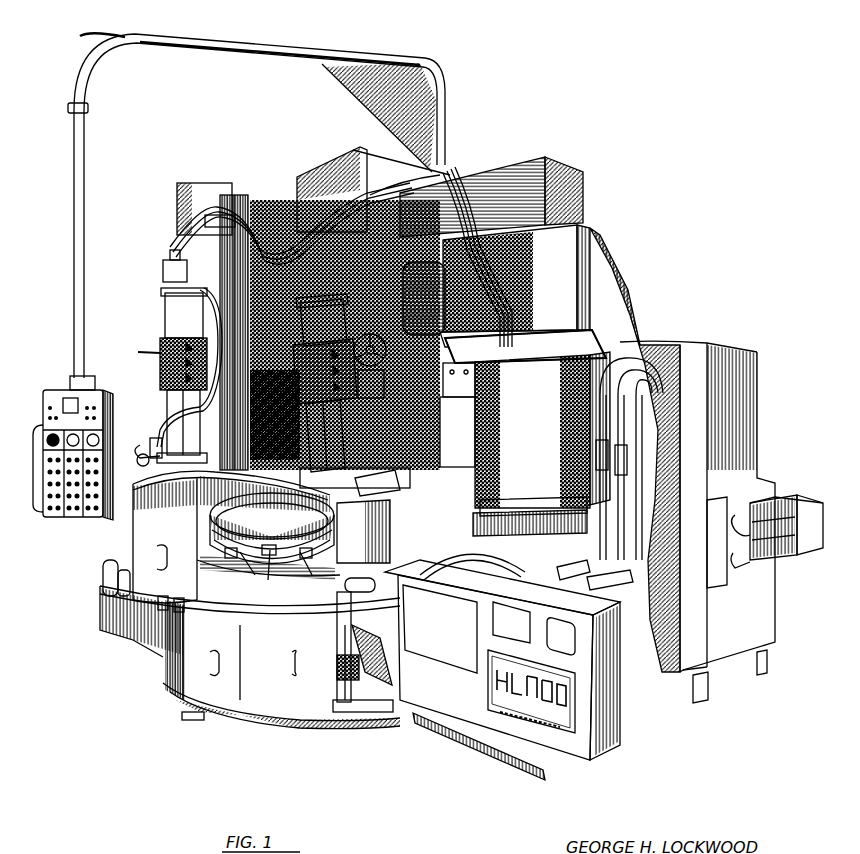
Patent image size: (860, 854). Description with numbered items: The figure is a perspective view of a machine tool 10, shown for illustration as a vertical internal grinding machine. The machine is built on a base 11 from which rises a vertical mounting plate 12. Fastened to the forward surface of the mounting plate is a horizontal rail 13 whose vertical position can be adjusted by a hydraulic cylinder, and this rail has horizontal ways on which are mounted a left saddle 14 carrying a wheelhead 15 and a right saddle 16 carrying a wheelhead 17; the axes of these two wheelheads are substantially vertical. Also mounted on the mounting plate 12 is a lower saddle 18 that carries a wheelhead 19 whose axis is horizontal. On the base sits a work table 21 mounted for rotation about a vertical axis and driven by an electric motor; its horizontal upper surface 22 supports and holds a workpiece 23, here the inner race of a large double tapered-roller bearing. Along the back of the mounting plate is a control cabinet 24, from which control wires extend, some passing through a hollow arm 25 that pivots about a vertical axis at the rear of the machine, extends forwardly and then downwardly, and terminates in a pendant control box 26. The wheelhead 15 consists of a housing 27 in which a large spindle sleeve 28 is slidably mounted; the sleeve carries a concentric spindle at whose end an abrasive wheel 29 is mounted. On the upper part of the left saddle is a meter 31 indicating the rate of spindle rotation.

The machine tool 10 is at (586, 192).
The base 11 is at (110, 608).
The vertical mounting plate 12 is at (560, 243).
The horizontal rail 13 is at (597, 360).
The left saddle 14 is at (163, 345).
The wheelhead 15 is at (172, 333).
The right saddle 16 is at (447, 405).
The wheelhead 17 is at (351, 395).
The lower saddle 18 is at (427, 680).
The wheelhead 19 is at (365, 598).
The work table 21 is at (230, 585).
The horizontal upper surface 22 is at (280, 593).
The workpiece 23 is at (283, 580).
The control cabinet 24 is at (740, 427).
The hollow arm 25 is at (267, 49).
The pendant control box 26 is at (68, 395).
The housing 27 is at (164, 383).
The spindle sleeve 28 is at (182, 407).
The abrasive wheel 29 is at (193, 453).
The meter 31 is at (163, 264).